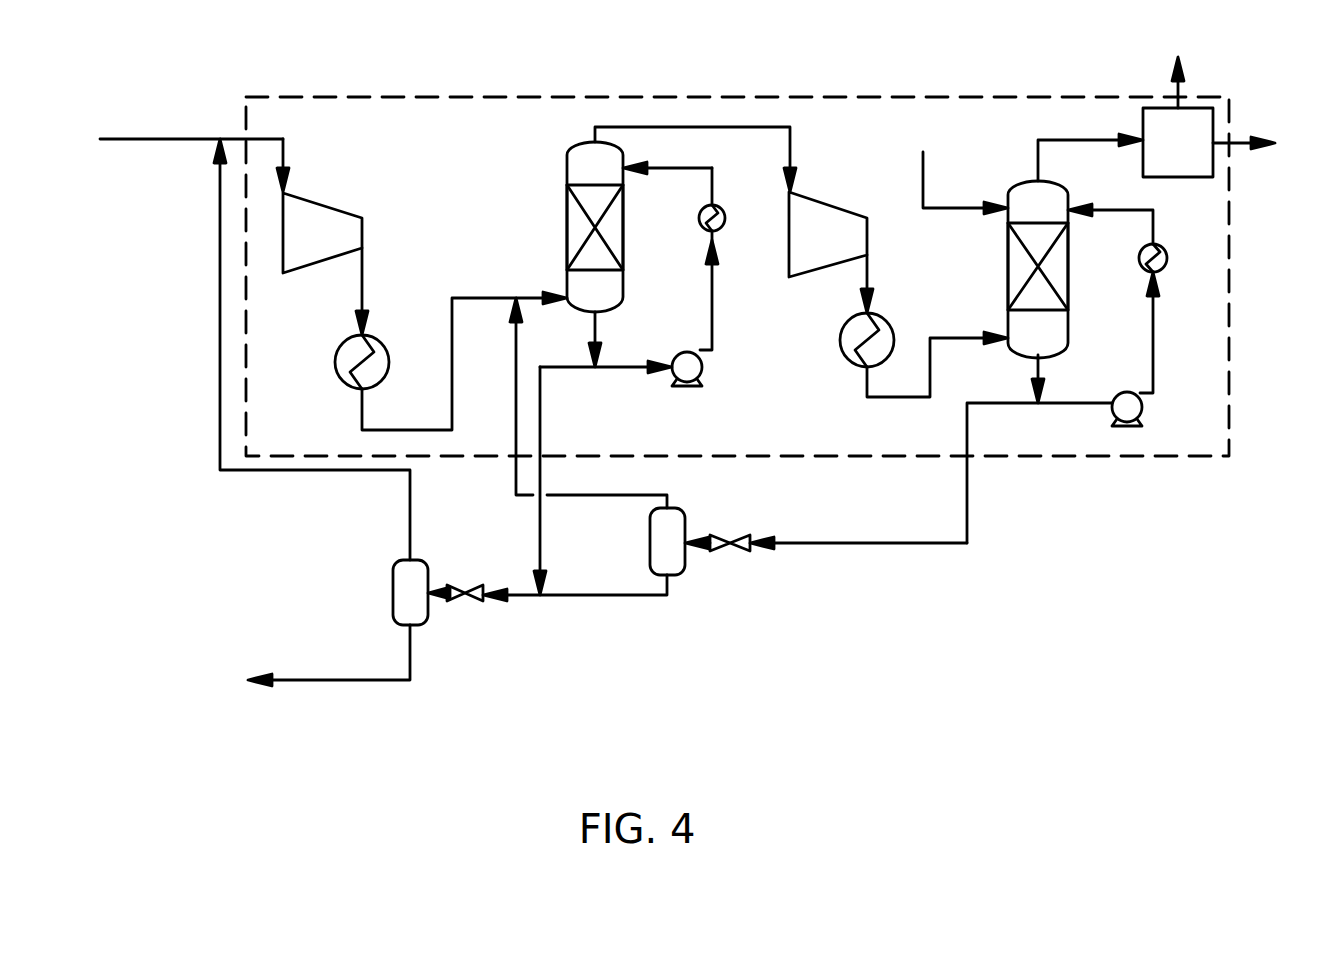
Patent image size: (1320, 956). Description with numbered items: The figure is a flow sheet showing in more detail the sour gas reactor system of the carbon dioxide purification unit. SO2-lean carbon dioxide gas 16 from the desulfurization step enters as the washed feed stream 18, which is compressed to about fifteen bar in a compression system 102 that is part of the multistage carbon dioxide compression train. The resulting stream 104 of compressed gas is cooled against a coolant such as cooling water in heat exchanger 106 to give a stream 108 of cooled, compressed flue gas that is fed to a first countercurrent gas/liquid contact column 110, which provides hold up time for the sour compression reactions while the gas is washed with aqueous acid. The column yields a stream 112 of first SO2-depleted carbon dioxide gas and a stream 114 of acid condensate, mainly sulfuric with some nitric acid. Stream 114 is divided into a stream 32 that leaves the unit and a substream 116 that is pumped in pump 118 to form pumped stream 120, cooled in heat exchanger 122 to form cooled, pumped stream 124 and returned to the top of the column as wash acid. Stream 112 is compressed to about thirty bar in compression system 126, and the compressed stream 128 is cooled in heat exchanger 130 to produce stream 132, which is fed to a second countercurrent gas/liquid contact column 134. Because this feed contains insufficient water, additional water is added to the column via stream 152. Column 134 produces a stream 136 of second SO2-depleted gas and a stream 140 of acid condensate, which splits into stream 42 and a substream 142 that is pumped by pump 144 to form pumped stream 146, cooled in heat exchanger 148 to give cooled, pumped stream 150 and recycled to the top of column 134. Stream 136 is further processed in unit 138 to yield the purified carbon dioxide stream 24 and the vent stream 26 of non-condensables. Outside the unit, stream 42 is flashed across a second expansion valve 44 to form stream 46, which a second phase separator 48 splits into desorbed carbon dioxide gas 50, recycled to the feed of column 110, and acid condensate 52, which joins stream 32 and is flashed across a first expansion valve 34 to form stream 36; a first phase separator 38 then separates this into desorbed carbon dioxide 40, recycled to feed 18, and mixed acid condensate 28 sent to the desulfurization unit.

The stream of SO2-lean carbon dioxide gas 16 is at (158, 139).
The feed stream of washed SO2-lean carbon dioxide gas 18 is at (238, 139).
The stream of purified carbon dioxide 24 is at (1254, 150).
The vent stream 26 is at (1175, 97).
The stream of mixed acid condensate 28 is at (360, 680).
The stream of mixed acid condensate at 15 bar 32 is at (540, 532).
The first expansion valve 34 is at (480, 603).
The stream containing reduced pressure first acid condensate and desorbed carbon dio 36 is at (448, 588).
The first phase separator 38 is at (400, 603).
The stream of desorbed carbon dioxide 40 is at (220, 300).
The stream of mixed acid condensate at 30 bar 42 is at (866, 544).
The second expansion valve 44 is at (731, 553).
The stream containing reduced pressure acid condensate and desorbed carbon dioxide g 46 is at (715, 536).
The second phase separator 48 is at (657, 553).
The stream of desorbed carbon dioxide gas at 15 bar 50 is at (614, 495).
The stream of acid condensate at 15 bar 52 is at (599, 596).
The compression system 102 is at (330, 247).
The stream of compressed SO2-lean carbon dioxide gas 104 is at (362, 280).
The heat exchanger 106 is at (335, 364).
The stream of cooled, compressed flue gas 108 is at (408, 430).
The first countercurrent gas/liquid contact column 110 is at (567, 209).
The stream of first SO2-depleted carbon dioxide gas 112 is at (733, 127).
The stream of acid condensate 114 is at (598, 331).
The substream of acid condensate 116 is at (630, 368).
The pump 118 is at (688, 388).
The pumped stream 120 is at (712, 313).
The heat exchanger 122 is at (699, 226).
The cooled, pumped stream 124 is at (712, 190).
The compression system 126 is at (839, 250).
The stream of compressed first SO2-depleted carbon dioxide gas 128 is at (860, 272).
The heat exchanger 130 is at (842, 353).
The stream of cooled, compressed first SO2-depleted carbon dioxide gas 132 is at (888, 398).
The second countercurrent gas/liquid contact column 134 is at (1008, 293).
The stream of second SO2-depleted carbon dioxide gas 136 is at (1072, 140).
The further processing unit 138 is at (1194, 157).
The stream of acid condensate 140 is at (1041, 374).
The substream of acid condensate 142 is at (1070, 403).
The pump 144 is at (1130, 426).
The pumped stream 146 is at (1153, 338).
The heat exchanger 148 is at (1168, 257).
The cooled, pumped stream 150 is at (1149, 210).
The stream of additional water 152 is at (923, 175).